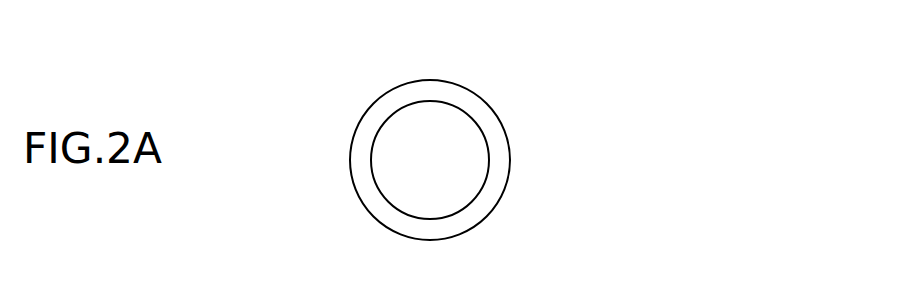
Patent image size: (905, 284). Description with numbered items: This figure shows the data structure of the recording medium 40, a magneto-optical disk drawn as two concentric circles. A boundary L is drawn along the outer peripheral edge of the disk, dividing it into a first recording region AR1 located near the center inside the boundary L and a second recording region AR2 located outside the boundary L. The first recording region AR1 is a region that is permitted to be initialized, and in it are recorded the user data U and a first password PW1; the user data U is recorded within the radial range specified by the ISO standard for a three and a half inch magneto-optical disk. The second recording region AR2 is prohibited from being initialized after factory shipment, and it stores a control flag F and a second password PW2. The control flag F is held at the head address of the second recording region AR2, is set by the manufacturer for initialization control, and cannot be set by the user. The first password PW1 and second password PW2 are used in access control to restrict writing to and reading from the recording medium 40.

The recording medium 40 is at (430, 80).
The first recording region AR1 is at (438, 115).
The user data U is at (450, 135).
The first password PW1 is at (467, 148).
The second recording region AR2 is at (499, 163).
The control flag F is at (498, 181).
The second password PW2 is at (493, 197).
The boundary L is at (465, 208).